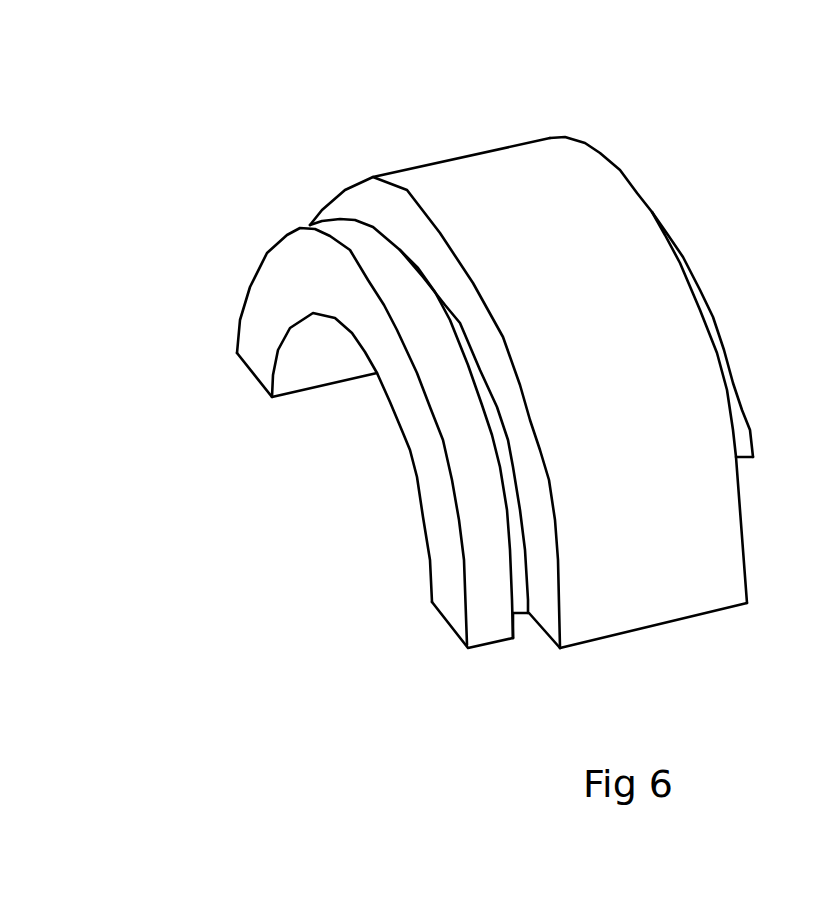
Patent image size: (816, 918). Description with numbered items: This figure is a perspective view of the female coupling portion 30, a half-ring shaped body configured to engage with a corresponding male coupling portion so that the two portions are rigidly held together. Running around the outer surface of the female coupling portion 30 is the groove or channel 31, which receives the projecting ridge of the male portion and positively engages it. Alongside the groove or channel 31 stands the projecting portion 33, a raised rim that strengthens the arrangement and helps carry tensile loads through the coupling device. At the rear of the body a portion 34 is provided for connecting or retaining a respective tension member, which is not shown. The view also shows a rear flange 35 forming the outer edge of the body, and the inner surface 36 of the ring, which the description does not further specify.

The female coupling portion 30 is at (417, 153).
The groove or channel 31 is at (523, 627).
The projecting portion 33 is at (310, 225).
The portion for connecting or retaining a tension member 34 is at (750, 430).
The rear flange 35 is at (502, 141).
The inner surface 36 is at (397, 413).